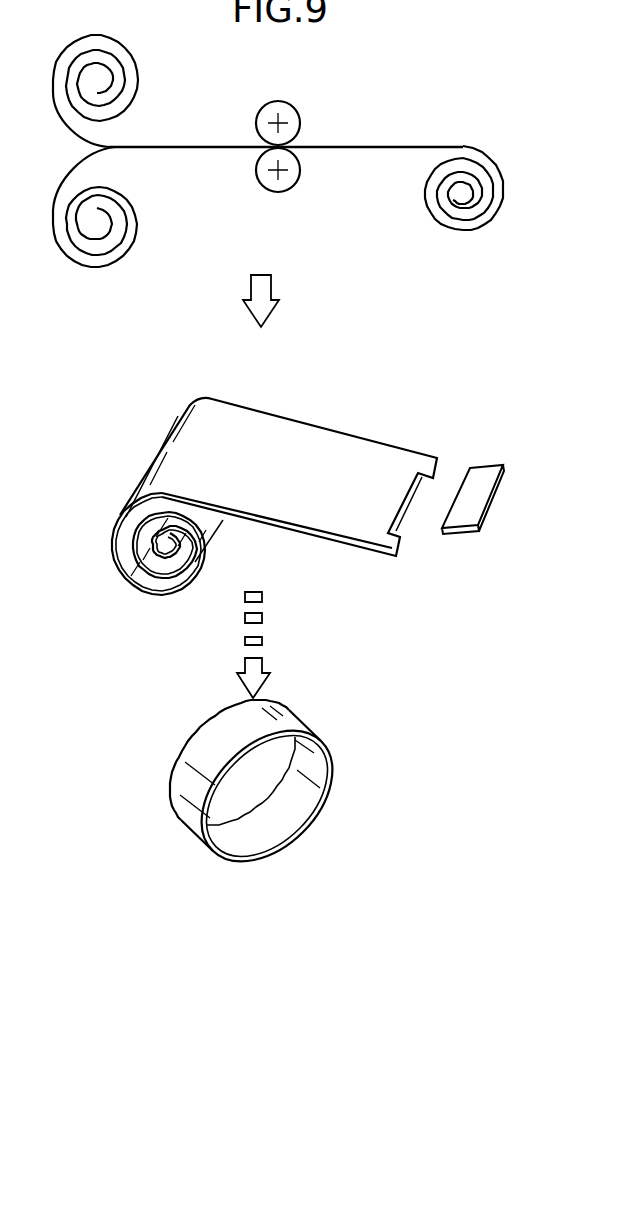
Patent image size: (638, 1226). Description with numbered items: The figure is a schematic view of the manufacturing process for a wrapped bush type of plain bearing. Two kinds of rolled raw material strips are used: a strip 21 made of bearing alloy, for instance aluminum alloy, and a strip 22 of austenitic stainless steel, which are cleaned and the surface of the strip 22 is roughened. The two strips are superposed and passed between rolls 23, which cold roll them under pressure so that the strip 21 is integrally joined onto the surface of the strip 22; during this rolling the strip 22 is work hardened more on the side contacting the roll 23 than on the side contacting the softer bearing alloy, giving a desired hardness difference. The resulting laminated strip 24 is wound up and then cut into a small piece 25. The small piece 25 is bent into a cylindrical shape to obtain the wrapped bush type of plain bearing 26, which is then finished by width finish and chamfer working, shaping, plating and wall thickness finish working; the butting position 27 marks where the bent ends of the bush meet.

The strip 21 is at (133, 52).
The strip 22 is at (134, 222).
The rolls 23 is at (298, 106).
The laminated strip 24 is at (500, 174).
The small piece 25 is at (500, 490).
The wrapped bush type of plain bearing 26 is at (320, 748).
The butting position 27 is at (290, 793).